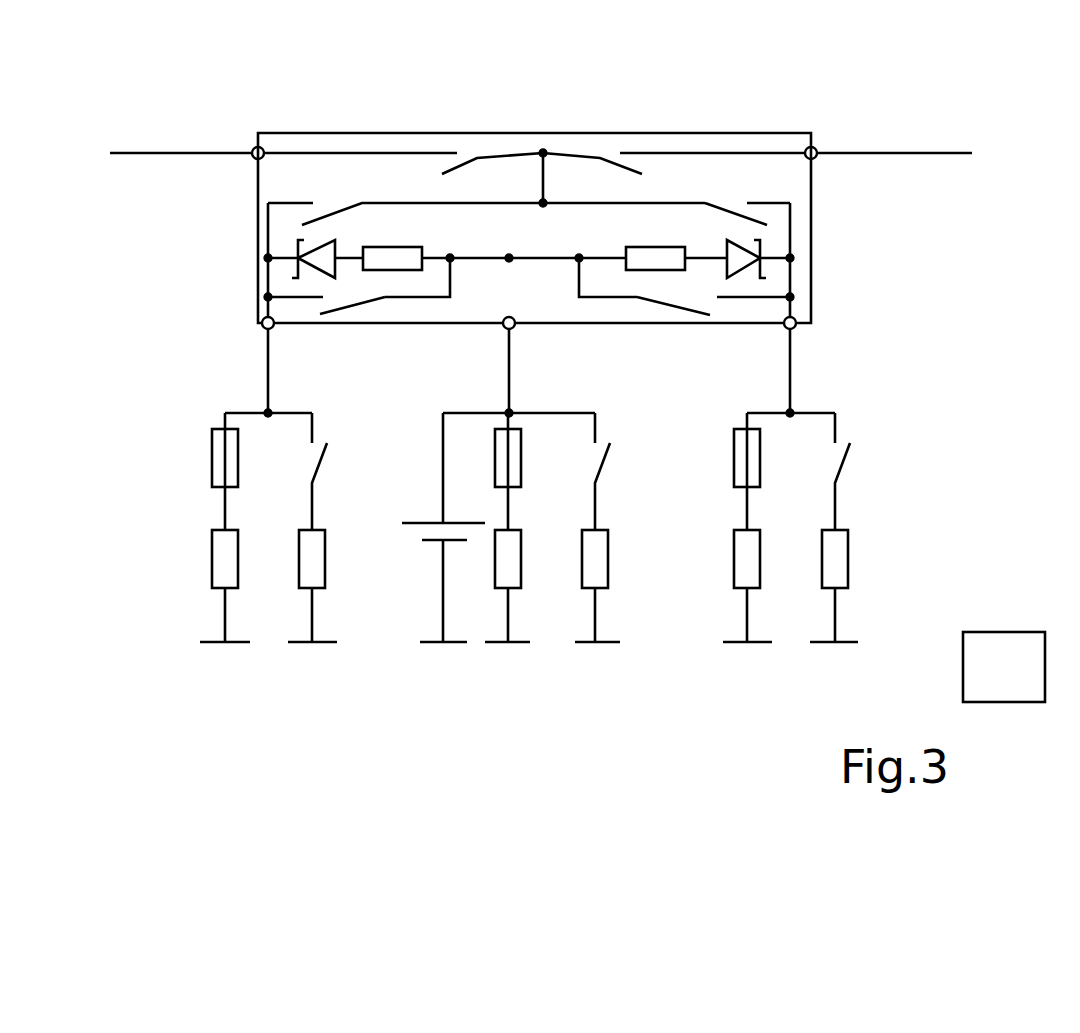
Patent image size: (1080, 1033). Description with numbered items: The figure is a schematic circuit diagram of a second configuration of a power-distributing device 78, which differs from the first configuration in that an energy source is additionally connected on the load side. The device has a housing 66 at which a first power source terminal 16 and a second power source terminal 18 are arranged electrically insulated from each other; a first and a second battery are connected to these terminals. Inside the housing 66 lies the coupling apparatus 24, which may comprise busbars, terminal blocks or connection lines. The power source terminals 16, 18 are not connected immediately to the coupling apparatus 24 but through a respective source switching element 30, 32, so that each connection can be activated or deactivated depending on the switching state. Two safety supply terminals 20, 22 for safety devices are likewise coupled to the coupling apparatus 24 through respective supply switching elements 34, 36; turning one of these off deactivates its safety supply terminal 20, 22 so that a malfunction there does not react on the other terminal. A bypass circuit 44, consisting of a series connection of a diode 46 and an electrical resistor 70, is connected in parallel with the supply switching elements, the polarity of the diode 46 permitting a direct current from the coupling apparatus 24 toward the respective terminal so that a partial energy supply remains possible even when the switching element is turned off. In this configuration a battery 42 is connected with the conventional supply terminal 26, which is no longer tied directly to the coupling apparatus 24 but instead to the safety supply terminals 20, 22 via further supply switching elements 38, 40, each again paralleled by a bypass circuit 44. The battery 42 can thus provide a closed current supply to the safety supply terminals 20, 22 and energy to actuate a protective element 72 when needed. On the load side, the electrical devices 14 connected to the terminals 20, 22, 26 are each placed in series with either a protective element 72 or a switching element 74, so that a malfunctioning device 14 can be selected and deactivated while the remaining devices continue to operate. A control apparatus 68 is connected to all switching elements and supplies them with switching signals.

The electrical device 14 is at (212, 557).
The first power source terminal 16 is at (254, 147).
The second power source terminal 18 is at (816, 148).
The safety supply terminal 20 is at (262, 329).
The safety supply terminal 22 is at (797, 330).
The coupling apparatus 24 is at (558, 227).
The conventional supply terminal 26 is at (503, 331).
The source switching element 30 is at (470, 163).
The source switching element 32 is at (600, 160).
The supply switching element 34 is at (318, 216).
The supply switching element 36 is at (755, 216).
The supply switching element 38 is at (387, 302).
The supply switching element 40 is at (670, 305).
The battery 42 is at (427, 543).
The bypass circuit 44 is at (558, 301).
The diode 46 is at (295, 244).
The housing 66 is at (708, 133).
The control apparatus 68 is at (1003, 632).
The electrical resistor 70 is at (407, 273).
The protective element 72 is at (213, 457).
The switching element 74 is at (328, 457).
The power-distributing device 78 is at (552, 173).